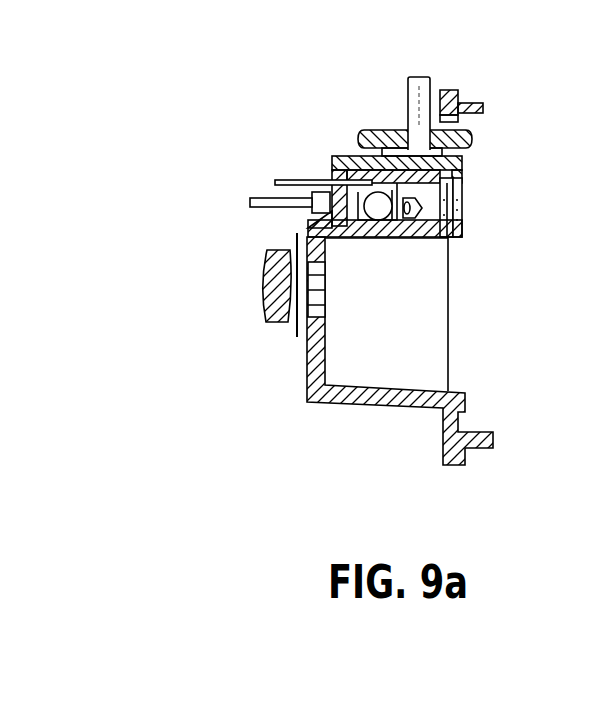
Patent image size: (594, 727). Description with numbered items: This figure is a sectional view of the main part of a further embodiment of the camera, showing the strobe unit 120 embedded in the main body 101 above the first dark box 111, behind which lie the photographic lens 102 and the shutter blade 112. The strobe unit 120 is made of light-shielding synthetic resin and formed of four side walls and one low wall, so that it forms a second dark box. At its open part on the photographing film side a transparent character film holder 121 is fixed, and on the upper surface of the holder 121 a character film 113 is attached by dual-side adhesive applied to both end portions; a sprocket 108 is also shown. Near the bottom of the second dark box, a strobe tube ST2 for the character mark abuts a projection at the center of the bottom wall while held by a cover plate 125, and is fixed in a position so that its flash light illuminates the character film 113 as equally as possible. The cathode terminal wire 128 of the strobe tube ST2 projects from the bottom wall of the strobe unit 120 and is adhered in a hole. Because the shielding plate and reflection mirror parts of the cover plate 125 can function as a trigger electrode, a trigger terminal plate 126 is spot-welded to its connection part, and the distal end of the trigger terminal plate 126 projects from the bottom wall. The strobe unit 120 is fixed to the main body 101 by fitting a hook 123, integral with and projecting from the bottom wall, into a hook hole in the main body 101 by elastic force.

The main body 101 is at (340, 402).
The photographic lens 102 is at (262, 307).
The sprocket 108 is at (462, 131).
The first dark box 111 is at (383, 342).
The shutter blade 112 is at (296, 325).
The character film 113 is at (462, 212).
The strobe unit 120 is at (400, 238).
The transparent character film holder 121 is at (445, 193).
The hook 123 is at (322, 200).
The cover plate 125 is at (422, 208).
The trigger terminal plate 126 is at (305, 181).
The cathode terminal wire 128 is at (250, 201).
The strobe tube ST2 is at (378, 206).